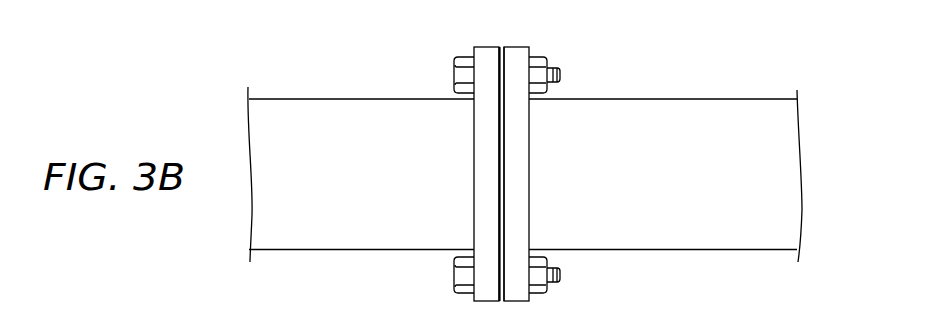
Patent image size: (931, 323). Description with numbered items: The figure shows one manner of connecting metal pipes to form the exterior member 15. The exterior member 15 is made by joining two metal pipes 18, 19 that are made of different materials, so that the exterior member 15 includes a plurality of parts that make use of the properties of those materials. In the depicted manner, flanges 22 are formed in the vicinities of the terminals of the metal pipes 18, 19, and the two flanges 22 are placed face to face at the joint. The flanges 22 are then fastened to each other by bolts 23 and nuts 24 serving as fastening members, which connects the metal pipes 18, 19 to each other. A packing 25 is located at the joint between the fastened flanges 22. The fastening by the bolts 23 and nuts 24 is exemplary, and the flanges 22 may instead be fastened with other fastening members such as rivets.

The exterior member 15 is at (760, 98).
The metal pipe 18 is at (341, 131).
The metal pipe 19 is at (682, 131).
The flange 22 is at (516, 158).
The bolt 23 is at (467, 62).
The nut 24 is at (535, 62).
The packing 25 is at (502, 302).